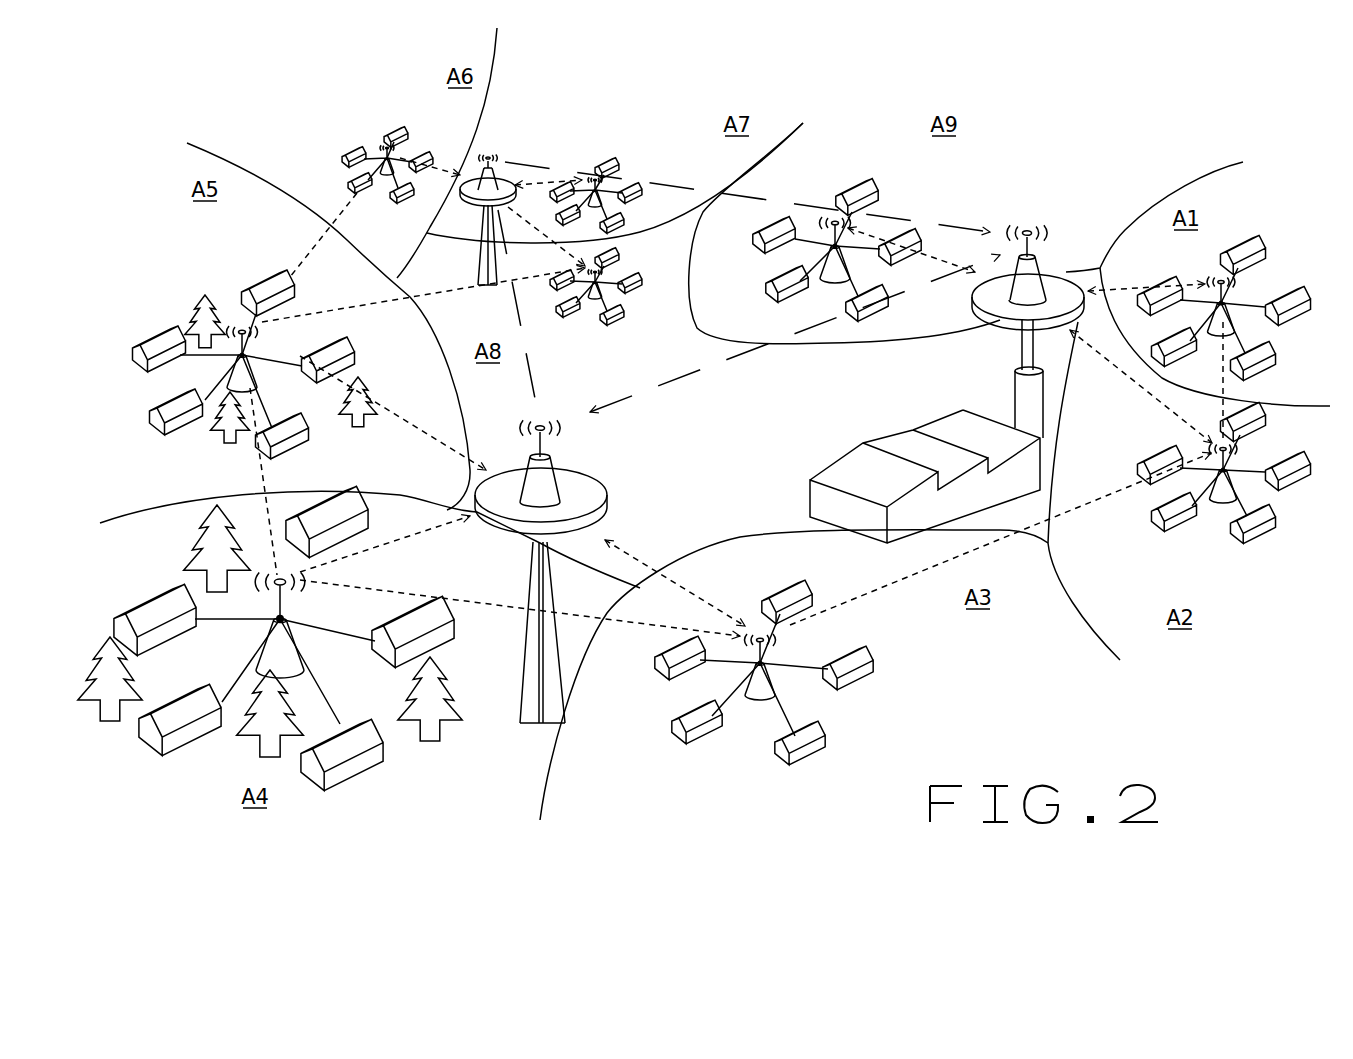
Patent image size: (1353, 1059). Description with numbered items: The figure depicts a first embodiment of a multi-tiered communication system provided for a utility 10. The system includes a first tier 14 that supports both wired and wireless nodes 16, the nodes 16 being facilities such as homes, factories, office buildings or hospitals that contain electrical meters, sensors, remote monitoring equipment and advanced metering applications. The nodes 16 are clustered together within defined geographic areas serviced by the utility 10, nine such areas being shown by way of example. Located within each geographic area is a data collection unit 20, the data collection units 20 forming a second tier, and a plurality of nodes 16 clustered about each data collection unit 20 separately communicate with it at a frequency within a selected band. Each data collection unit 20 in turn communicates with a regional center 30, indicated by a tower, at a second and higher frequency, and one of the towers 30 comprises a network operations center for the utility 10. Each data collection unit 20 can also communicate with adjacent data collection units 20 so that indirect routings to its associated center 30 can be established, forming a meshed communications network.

The utility 10 is at (958, 498).
The first tier 14 is at (330, 158).
The nodes 16 is at (393, 131).
The data collection unit 20 is at (376, 163).
The regional center 30 is at (601, 472).